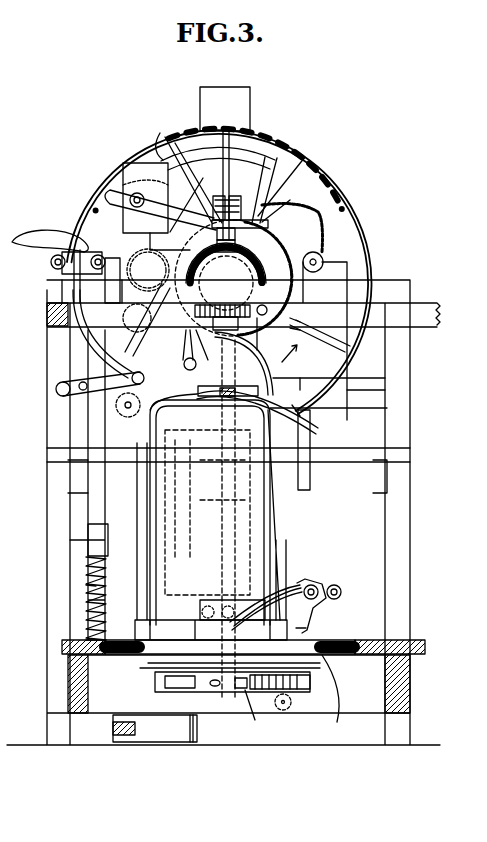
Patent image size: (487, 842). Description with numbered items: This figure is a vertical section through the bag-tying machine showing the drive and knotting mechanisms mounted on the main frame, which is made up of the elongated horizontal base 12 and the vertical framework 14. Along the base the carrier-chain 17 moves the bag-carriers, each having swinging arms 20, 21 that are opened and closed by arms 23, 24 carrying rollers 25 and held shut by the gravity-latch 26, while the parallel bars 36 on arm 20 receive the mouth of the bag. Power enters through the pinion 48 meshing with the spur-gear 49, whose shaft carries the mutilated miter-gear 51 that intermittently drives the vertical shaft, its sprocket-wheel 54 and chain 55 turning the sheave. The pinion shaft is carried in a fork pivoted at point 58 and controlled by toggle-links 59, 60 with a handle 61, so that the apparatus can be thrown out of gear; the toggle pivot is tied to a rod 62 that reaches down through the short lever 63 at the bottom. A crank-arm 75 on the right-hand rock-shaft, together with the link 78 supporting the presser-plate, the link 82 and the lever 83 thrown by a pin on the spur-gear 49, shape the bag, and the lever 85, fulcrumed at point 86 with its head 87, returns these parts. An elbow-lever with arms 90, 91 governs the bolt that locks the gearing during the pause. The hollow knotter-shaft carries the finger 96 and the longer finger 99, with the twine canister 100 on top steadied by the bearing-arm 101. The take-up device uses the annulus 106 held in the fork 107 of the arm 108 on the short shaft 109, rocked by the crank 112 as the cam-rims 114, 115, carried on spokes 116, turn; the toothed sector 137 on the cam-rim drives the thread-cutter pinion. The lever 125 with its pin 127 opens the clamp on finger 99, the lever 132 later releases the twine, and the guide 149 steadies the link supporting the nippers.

The base portion 12 is at (352, 643).
The framework 14 is at (380, 292).
The carrier-chain 17 is at (335, 695).
The arm 20 is at (148, 557).
The arm 21 is at (283, 548).
The arm 23 is at (280, 582).
The arm 24 is at (262, 594).
The rollers 25 is at (318, 588).
The gravity-latch 26 is at (306, 628).
The parallel bars 36 is at (313, 418).
The pinion 48 is at (60, 308).
The spur-gear 49 is at (289, 179).
The mutilated miter-gear 51 is at (146, 319).
The sprocket-wheel 54 is at (268, 712).
The chain 55 is at (305, 680).
The pivot point 58 is at (129, 412).
The toggle-link 59 is at (52, 268).
The toggle-link 60 is at (121, 243).
The handle 61 is at (42, 236).
The rod 62 is at (100, 498).
The short lever 63 is at (86, 585).
The crank-arm 75 is at (173, 742).
The link 78 is at (88, 540).
The link 82 is at (220, 400).
The lever 83 is at (270, 500).
The lever 85 is at (310, 445).
The fulcrum point 86 is at (323, 261).
The head 87 is at (249, 270).
The short arm 90 is at (222, 327).
The arm 91 is at (200, 342).
The finger 96 is at (276, 378).
The finger 99 is at (330, 378).
The canister 100 is at (225, 163).
The bearing-arm 101 is at (192, 142).
The annulus 106 is at (234, 206).
The fork 107 is at (285, 204).
The arm 108 is at (193, 197).
The short shaft 109 is at (131, 196).
The crank 112 is at (104, 197).
The cam-rim 114 is at (346, 199).
The cam-rim 115 is at (85, 330).
The spokes 116 is at (18, 312).
The lever 125 is at (290, 318).
The pin 127 is at (290, 328).
The lever 132 is at (62, 384).
The toothed sector 137 is at (252, 137).
The guide 149 is at (217, 275).